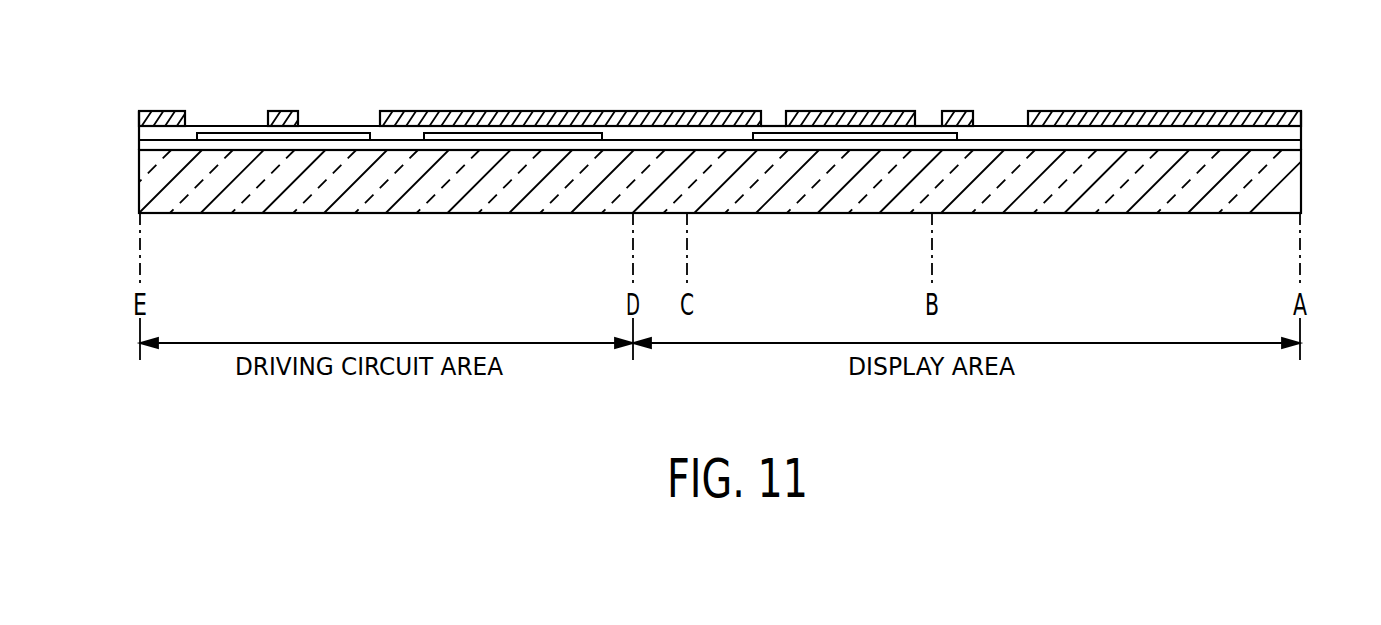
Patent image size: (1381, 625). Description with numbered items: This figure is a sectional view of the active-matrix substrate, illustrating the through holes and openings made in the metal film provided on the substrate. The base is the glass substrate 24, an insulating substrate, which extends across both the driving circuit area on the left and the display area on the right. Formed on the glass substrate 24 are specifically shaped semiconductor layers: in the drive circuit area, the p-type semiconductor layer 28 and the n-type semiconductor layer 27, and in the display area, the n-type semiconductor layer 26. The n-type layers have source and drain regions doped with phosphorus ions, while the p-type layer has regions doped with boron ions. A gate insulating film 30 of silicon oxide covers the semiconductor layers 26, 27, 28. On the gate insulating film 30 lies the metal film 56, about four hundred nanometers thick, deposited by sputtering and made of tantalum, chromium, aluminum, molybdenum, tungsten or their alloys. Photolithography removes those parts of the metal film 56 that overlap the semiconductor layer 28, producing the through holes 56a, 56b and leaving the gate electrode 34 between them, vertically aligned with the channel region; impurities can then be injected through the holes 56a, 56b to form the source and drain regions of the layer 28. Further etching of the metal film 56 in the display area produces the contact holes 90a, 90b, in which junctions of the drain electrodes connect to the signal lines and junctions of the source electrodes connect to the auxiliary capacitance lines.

The glass substrate 24 is at (1292, 187).
The gate insulating film 30 is at (1288, 144).
The n-type semiconductor layer 26 is at (837, 137).
The n-type semiconductor layer 27 is at (493, 137).
The p-type semiconductor layer 28 is at (298, 137).
The gate electrode 34 is at (283, 115).
The metal film 56 is at (510, 117).
The through hole 56a is at (350, 118).
The through hole 56b is at (225, 118).
The contact hole 90a is at (778, 117).
The contact hole 90b is at (927, 117).